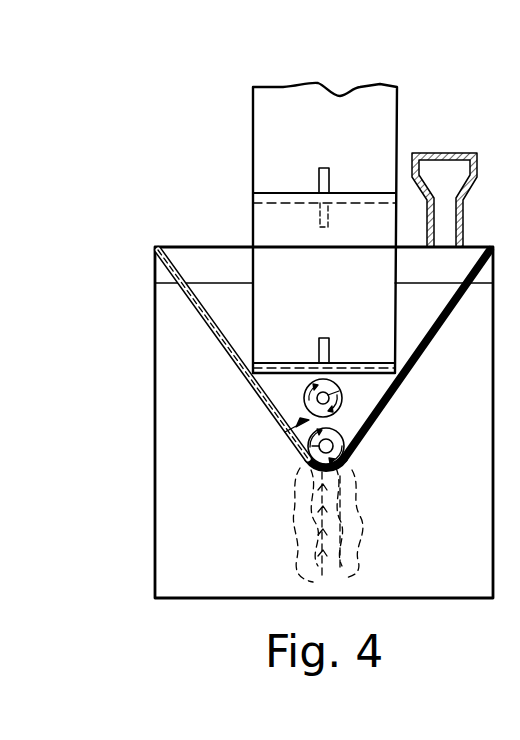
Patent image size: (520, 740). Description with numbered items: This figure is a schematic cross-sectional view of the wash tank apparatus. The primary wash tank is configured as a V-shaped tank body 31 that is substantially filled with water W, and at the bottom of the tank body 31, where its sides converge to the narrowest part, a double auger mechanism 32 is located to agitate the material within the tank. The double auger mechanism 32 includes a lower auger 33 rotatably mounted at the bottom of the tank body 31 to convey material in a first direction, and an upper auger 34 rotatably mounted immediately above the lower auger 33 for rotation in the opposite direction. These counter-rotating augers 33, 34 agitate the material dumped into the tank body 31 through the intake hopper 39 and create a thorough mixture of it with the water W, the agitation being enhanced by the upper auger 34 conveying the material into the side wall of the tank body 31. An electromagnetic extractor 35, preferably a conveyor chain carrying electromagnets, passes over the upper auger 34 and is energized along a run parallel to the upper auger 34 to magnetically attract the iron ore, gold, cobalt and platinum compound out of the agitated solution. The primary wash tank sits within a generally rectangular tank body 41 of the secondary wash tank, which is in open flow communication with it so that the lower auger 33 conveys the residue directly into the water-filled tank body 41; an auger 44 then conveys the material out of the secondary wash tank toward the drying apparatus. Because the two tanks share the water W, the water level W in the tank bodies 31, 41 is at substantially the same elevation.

The V-shaped tank body 31 is at (238, 368).
The double auger mechanism 32 is at (292, 428).
The lower auger 33 is at (346, 432).
The upper auger 34 is at (339, 391).
The electromagnetic extractor 35 is at (318, 84).
The intake hopper 39 is at (477, 166).
The rectangular tank body 41 is at (155, 565).
The auger 44 is at (362, 500).
The water W is at (226, 279).